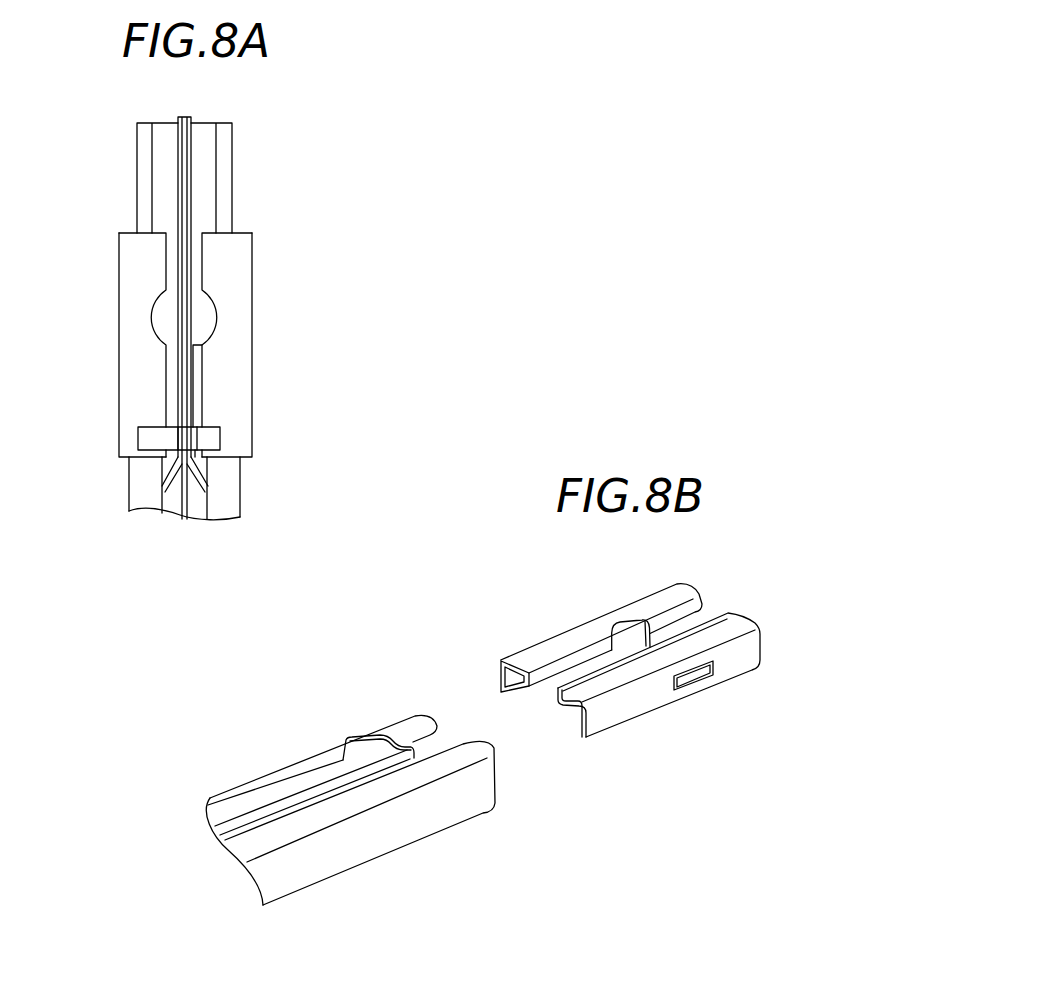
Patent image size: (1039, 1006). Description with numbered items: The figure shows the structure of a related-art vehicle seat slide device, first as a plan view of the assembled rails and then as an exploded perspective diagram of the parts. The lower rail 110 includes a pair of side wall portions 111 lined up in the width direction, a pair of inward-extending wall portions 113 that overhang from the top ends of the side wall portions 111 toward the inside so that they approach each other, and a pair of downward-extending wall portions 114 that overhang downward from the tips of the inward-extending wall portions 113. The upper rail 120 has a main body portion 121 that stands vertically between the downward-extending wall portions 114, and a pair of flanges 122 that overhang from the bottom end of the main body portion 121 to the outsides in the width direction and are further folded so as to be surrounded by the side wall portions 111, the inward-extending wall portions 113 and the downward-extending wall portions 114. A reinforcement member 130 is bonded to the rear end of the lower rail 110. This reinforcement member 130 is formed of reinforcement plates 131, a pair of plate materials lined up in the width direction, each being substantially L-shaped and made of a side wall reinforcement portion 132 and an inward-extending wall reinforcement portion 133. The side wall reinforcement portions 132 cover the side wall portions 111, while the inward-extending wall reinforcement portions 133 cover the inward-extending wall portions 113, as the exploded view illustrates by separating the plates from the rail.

In FIG. 8A, the lower rail 110 is at (178, 490).
In FIG. 8B, the lower rail 110 is at (350, 836).
In FIG. 8A, the side wall portions 111 is at (128, 473).
In FIG. 8B, the side wall portions 111 is at (413, 818).
In FIG. 8A, the inward-extending wall portions 113 is at (133, 503).
In FIG. 8B, the inward-extending wall portions 113 is at (333, 813).
In FIG. 8B, the downward-extending wall portions 114 is at (268, 800).
In FIG. 8A, the upper rail 120 is at (166, 318).
In FIG. 8A, the main body portion 121 is at (188, 153).
In FIG. 8A, the flanges 122 is at (232, 199).
In FIG. 8A, the reinforcement member 130 is at (214, 343).
In FIG. 8B, the reinforcement member 130 is at (665, 664).
In FIG. 8A, the reinforcement plates 131 is at (150, 262).
In FIG. 8B, the reinforcement plates 131 is at (667, 581).
In FIG. 8A, the side wall reinforcement portion 132 is at (119, 347).
In FIG. 8B, the side wall reinforcement portion 132 is at (498, 670).
In FIG. 8A, the inward-extending wall reinforcement portion 133 is at (137, 400).
In FIG. 8B, the inward-extending wall reinforcement portion 133 is at (592, 681).